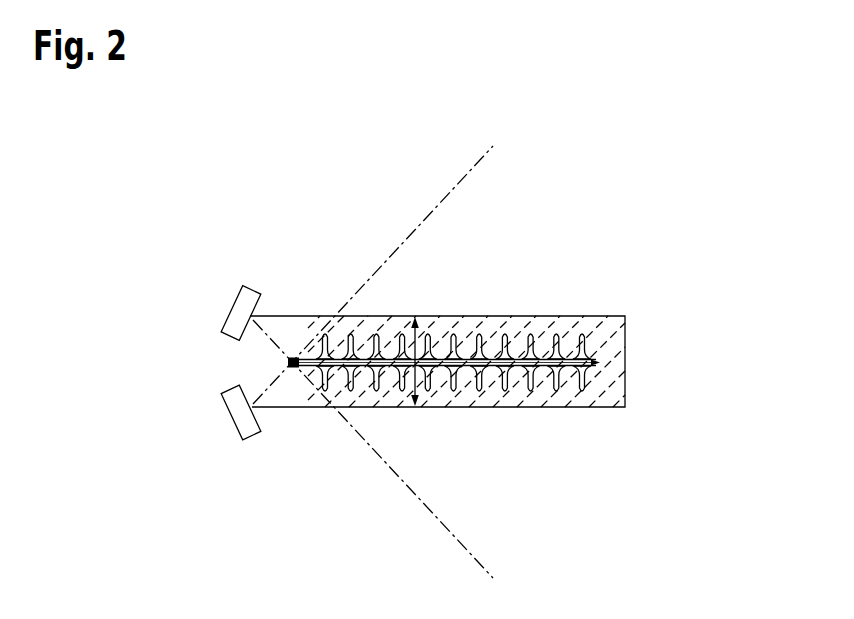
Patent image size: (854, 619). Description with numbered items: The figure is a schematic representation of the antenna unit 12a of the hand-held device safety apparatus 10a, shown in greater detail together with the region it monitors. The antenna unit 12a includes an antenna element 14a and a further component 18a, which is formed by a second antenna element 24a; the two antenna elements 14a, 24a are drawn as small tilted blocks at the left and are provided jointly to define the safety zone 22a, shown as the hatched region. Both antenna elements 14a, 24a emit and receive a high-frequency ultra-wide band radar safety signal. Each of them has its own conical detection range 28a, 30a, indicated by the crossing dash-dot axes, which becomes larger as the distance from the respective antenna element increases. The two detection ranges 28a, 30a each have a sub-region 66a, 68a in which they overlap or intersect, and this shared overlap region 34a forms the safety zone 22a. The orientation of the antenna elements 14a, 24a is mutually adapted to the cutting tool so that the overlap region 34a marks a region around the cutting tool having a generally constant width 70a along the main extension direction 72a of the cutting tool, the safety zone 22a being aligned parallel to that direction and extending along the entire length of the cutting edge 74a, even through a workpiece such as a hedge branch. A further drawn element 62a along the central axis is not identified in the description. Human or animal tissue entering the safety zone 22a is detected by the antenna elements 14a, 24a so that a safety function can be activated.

The hand-held device safety apparatus 10a is at (266, 225).
The antenna unit 12a is at (265, 483).
The antenna element 14a is at (243, 310).
The further component 18a is at (240, 403).
The safety zone 22a is at (438, 388).
The antenna element 24a is at (242, 421).
The conical detection range 28a is at (407, 440).
The conical detection range 30a is at (407, 282).
The shared overlap region 34a is at (603, 343).
The carrier rod 62a is at (495, 335).
The sub-region 66a is at (553, 327).
The sub-region 68a is at (533, 390).
The constant width 70a is at (437, 321).
The main extension direction 72a is at (568, 372).
The cutting edge 74a is at (484, 380).